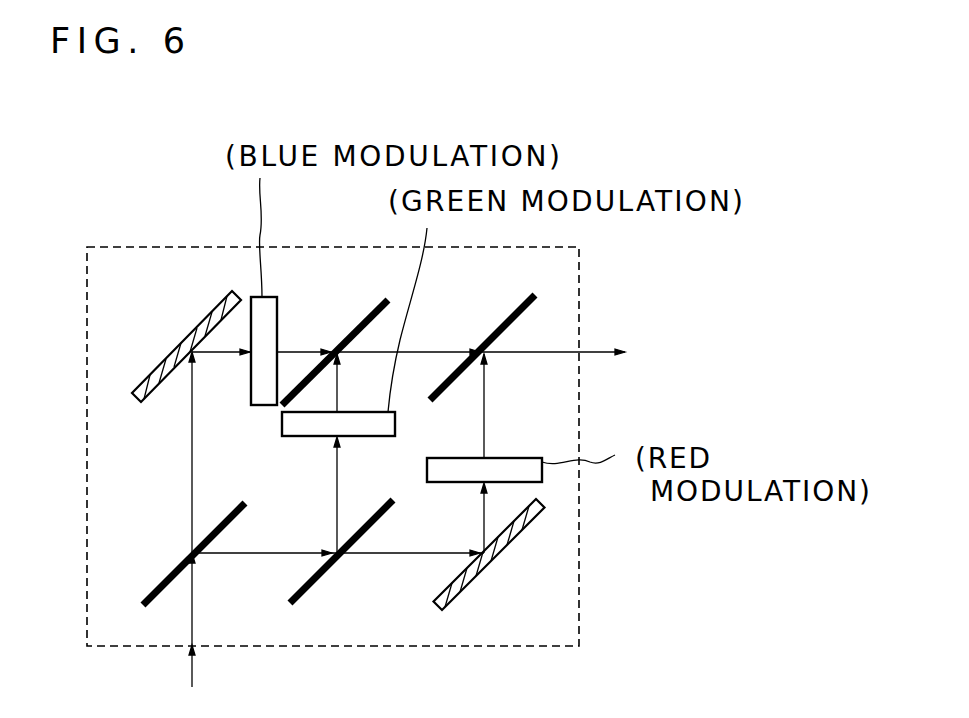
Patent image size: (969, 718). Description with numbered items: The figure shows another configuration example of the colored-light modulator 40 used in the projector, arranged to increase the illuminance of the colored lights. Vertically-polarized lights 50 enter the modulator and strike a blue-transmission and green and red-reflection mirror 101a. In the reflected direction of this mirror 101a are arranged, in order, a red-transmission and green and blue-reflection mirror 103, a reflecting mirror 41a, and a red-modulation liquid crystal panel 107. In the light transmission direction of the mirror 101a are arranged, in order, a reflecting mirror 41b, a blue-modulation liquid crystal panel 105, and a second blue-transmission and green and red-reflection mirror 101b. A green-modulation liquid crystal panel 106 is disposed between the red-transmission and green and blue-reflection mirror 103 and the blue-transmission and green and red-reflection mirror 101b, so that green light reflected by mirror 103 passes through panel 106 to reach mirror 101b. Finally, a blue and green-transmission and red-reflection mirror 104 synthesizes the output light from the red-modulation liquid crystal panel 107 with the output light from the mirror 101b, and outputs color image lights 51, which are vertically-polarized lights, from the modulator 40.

The colored-light modulator 40 is at (579, 550).
The reflecting mirror 41a is at (477, 582).
The reflecting mirror 41b is at (162, 362).
The vertically-polarized lights 50 is at (193, 676).
The color image lights 51 is at (593, 348).
The blue-transmission and green and red-reflection mirror 101a is at (158, 588).
The blue-transmission and green and red-reflection mirror 101b is at (355, 328).
The red-transmission and green and blue-reflection mirror 103 is at (307, 583).
The blue and green-transmission and red-reflection mirror 104 is at (515, 311).
The blue-modulation liquid crystal panel 105 is at (252, 387).
The green-modulation liquid crystal panel 106 is at (293, 440).
The red-modulation liquid crystal panel 107 is at (520, 456).